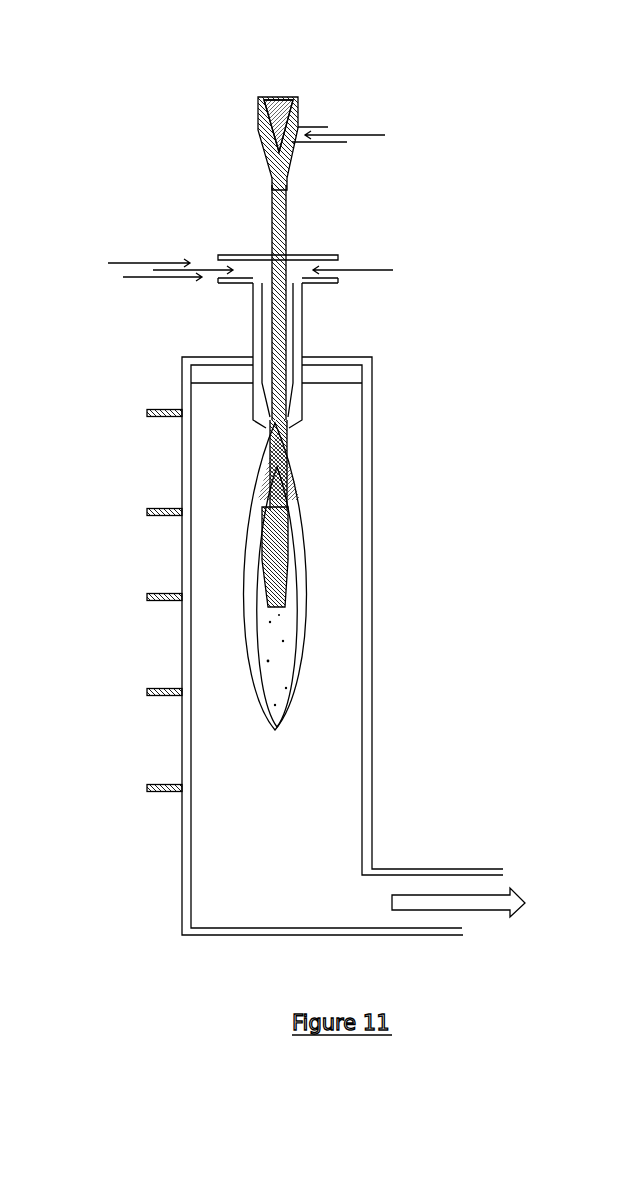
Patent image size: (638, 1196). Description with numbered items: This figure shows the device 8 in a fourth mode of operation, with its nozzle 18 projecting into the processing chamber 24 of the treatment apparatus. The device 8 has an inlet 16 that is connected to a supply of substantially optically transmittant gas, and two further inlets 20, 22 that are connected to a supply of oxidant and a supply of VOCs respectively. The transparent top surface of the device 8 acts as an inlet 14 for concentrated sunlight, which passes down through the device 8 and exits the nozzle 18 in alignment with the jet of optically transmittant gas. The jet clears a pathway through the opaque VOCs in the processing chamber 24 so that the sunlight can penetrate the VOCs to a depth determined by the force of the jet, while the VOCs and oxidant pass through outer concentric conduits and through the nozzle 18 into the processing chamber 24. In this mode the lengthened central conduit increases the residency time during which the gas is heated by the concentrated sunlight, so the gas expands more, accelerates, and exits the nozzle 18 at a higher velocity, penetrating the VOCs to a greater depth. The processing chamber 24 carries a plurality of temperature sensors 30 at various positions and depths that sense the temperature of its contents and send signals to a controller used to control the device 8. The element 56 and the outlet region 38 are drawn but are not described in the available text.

The device 8 is at (355, 190).
The inlet 14 is at (280, 96).
The inlet 16 is at (328, 127).
The feed rod / stem 56 is at (286, 216).
The inlet 22 is at (240, 284).
The inlet 20 is at (320, 284).
The nozzle 18 is at (306, 403).
The processing chamber 24 is at (340, 508).
The temperature sensors 30 is at (165, 413).
The outlet 38 is at (437, 869).